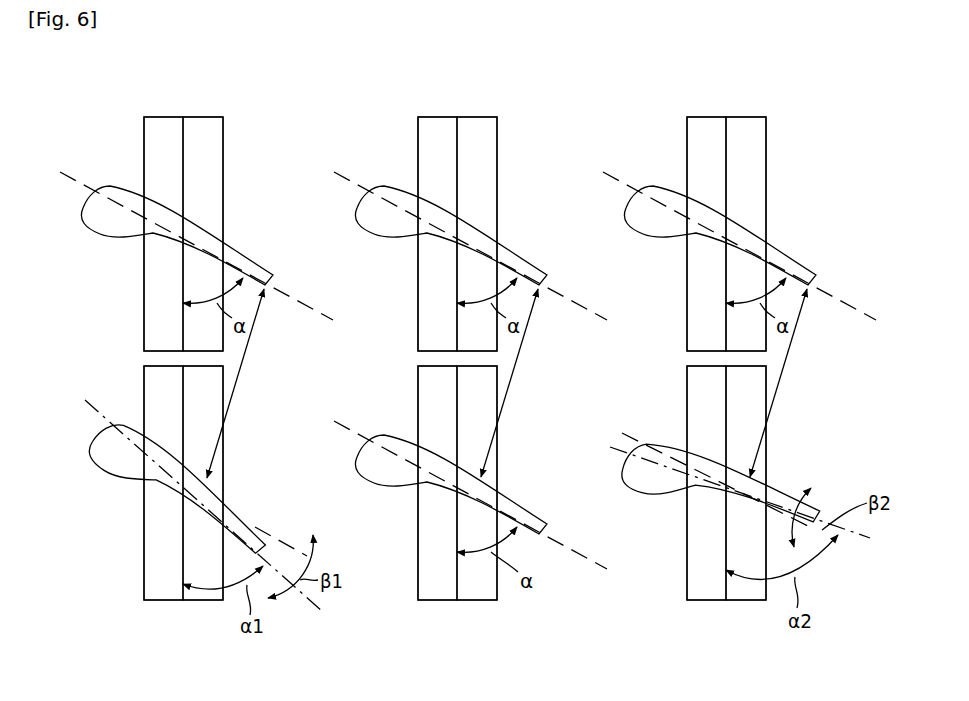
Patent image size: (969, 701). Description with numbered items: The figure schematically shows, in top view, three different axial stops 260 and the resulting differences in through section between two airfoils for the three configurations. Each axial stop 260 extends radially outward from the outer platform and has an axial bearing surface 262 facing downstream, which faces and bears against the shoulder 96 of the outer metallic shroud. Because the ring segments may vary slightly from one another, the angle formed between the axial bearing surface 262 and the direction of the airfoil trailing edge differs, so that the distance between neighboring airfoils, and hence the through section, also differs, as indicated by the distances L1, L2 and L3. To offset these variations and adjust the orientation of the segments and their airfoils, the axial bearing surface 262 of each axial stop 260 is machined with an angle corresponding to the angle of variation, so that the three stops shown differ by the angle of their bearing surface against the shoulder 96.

The shoulder 96 is at (223, 180).
The axial stop 260 is at (155, 128).
The axial bearing surface 262 is at (190, 137).
The distance between airfoils L1 is at (263, 360).
The distance between airfoils L2 is at (537, 360).
The third distance L3 is at (805, 360).